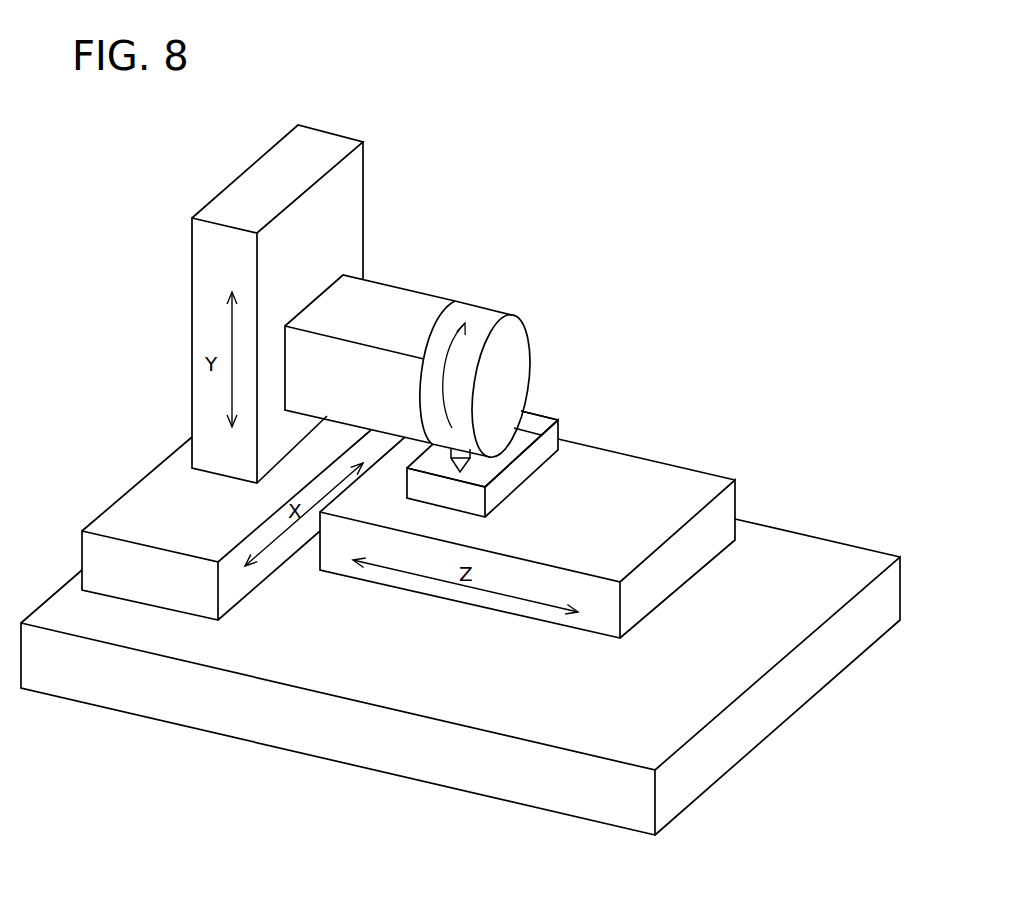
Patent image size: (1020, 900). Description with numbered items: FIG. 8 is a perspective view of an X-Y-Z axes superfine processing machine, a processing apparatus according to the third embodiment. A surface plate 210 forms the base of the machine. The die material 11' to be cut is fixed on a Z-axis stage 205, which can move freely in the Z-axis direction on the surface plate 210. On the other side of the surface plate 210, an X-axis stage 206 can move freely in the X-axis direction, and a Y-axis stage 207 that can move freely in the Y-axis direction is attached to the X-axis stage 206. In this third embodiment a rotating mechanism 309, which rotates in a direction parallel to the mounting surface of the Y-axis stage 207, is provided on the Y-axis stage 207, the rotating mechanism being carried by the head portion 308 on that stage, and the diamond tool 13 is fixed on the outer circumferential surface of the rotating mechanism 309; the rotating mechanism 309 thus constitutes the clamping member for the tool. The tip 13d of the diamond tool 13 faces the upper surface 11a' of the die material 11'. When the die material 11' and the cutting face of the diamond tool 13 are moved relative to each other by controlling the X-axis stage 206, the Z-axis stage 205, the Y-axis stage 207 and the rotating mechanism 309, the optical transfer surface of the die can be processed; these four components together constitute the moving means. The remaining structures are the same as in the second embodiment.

The surface plate 210 is at (338, 753).
The X-axis stage 206 is at (135, 572).
The Y-axis stage 207 is at (215, 267).
The measuring head 308 is at (393, 285).
The rotating mechanism 309 is at (472, 318).
The diamond tool 13 is at (452, 452).
The stylus tip 13d is at (476, 466).
The die material 11' is at (505, 464).
The workpiece measurement surface 11a' is at (515, 412).
The Z-axis stage 205 is at (688, 563).